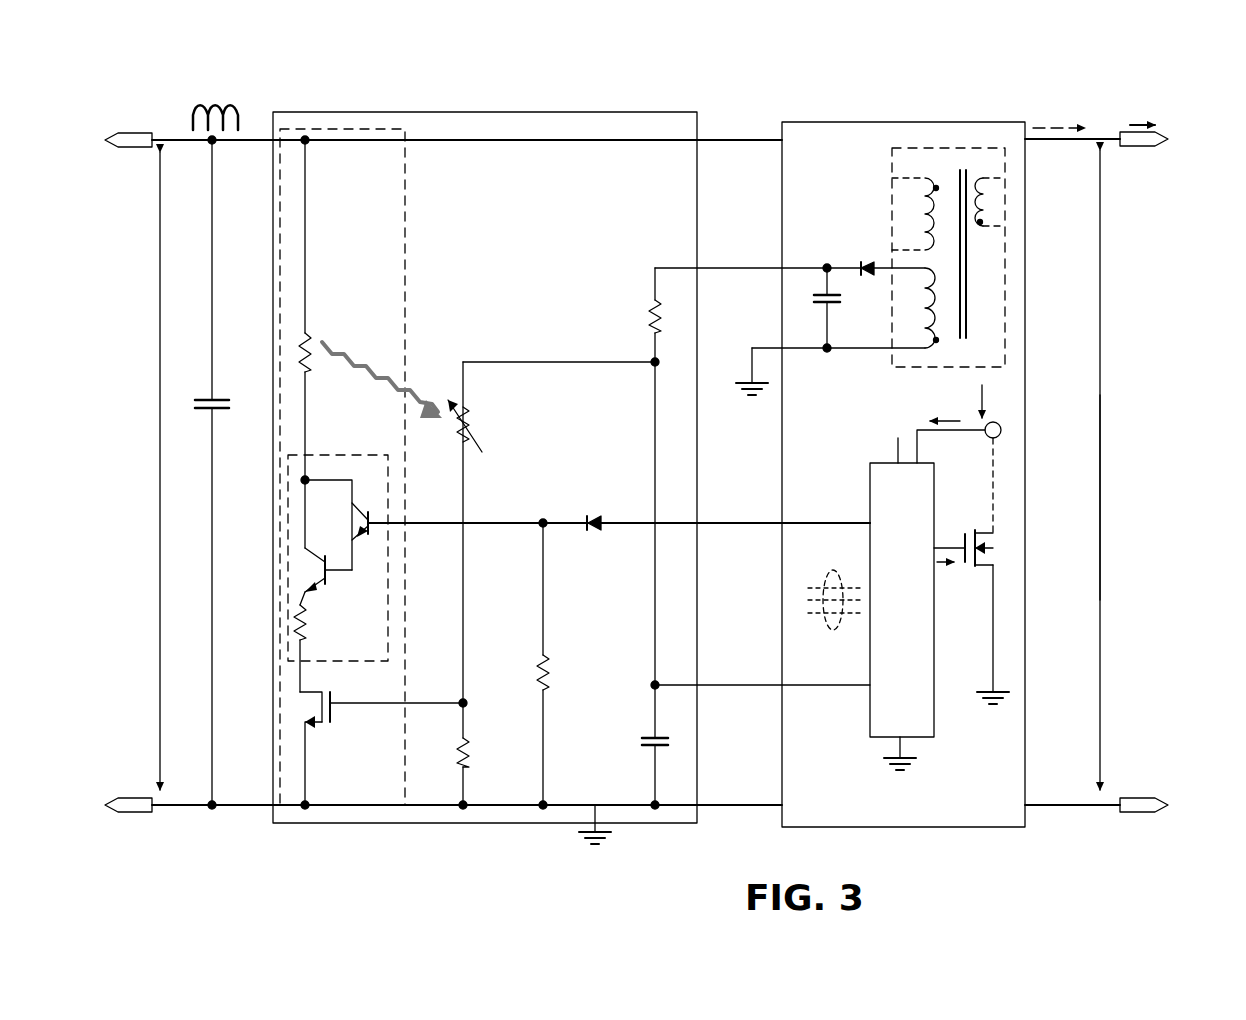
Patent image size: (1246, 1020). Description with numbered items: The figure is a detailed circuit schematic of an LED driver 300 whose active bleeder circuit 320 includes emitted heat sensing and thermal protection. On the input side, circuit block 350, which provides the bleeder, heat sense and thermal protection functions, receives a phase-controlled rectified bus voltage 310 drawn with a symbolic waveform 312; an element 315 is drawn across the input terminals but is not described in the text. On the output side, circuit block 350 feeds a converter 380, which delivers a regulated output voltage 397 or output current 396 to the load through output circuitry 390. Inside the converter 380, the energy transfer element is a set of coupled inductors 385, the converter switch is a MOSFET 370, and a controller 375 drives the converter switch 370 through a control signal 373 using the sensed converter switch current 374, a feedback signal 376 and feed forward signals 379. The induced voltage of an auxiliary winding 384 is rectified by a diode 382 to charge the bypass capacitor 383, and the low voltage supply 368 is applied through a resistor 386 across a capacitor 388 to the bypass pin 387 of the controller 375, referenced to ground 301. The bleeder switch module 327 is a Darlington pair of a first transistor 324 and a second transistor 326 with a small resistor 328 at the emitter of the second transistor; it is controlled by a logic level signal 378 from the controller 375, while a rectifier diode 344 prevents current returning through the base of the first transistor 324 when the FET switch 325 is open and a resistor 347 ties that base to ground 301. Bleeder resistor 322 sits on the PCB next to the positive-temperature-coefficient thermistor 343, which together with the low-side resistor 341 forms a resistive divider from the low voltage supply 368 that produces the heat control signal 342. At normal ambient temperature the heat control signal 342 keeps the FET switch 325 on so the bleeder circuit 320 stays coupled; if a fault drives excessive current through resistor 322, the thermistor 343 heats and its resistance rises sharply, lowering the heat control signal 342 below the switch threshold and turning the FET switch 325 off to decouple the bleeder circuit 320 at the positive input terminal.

The LED driver 300 is at (377, 27).
The ground 301 is at (752, 398).
The phase-controlled rectified bus voltage 310 is at (150, 110).
The symbolic waveform 312 is at (218, 104).
The input capacitor 315 is at (220, 400).
The active bleeder circuit 320 is at (345, 128).
The resistor 322 is at (314, 332).
The transistor Q1 324 is at (360, 500).
The FET switch 325 is at (344, 720).
The transistor Q2 326 is at (333, 578).
The bleeder switch module 327 is at (328, 452).
The small resistor 328 is at (318, 620).
The low-side resistor R1 341 is at (462, 758).
The heat control signal 342 is at (410, 703).
The thermistor RT 343 is at (475, 412).
The rectifier diode 344 is at (604, 504).
The resistor 347 is at (540, 660).
The circuit block 350 is at (478, 112).
The low voltage LV supply 368 is at (710, 268).
The converter switch 370 is at (990, 524).
The control signal 373 is at (942, 574).
The converter switch current 374 is at (956, 416).
The controller 375 is at (868, 480).
The feedback signal 376 is at (896, 418).
The logic level signal 378 is at (760, 503).
The feed forward signals 379 is at (826, 580).
The converter 380 is at (882, 110).
The diode 382 is at (866, 262).
The bypass capacitor 383 is at (824, 304).
The auxiliary winding 384 is at (918, 328).
The coupled inductors 385 is at (880, 166).
The resistor 386 is at (650, 308).
The bypass pin BP 387 is at (824, 680).
The capacitor 388 is at (665, 742).
The output circuitry 390 is at (1136, 494).
The output current Io 396 is at (1160, 106).
The output voltage Vo 397 is at (1196, 128).